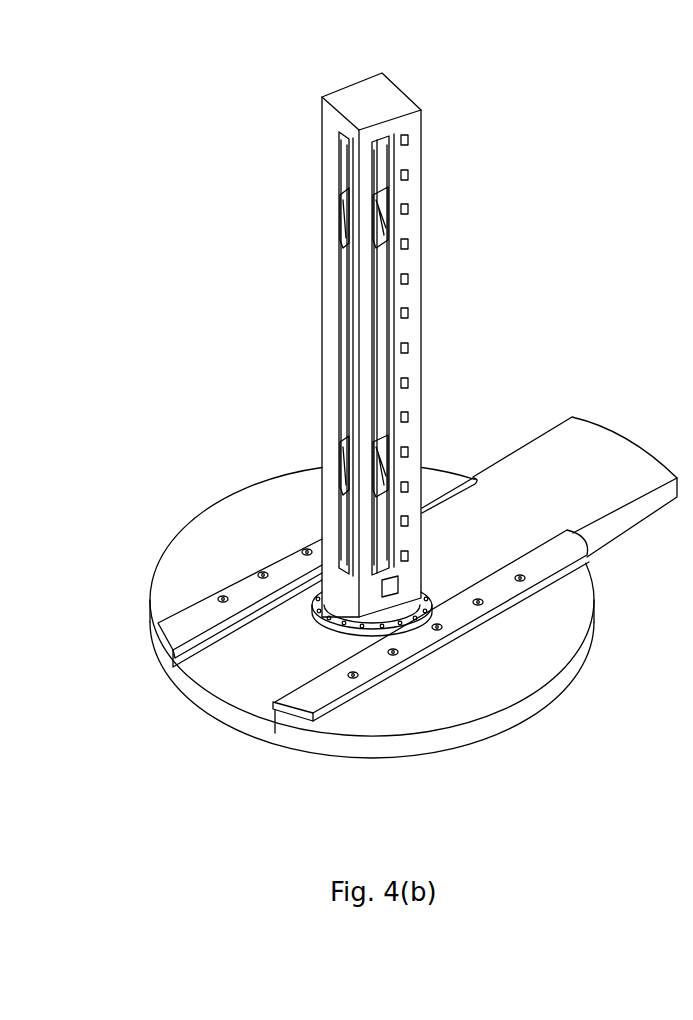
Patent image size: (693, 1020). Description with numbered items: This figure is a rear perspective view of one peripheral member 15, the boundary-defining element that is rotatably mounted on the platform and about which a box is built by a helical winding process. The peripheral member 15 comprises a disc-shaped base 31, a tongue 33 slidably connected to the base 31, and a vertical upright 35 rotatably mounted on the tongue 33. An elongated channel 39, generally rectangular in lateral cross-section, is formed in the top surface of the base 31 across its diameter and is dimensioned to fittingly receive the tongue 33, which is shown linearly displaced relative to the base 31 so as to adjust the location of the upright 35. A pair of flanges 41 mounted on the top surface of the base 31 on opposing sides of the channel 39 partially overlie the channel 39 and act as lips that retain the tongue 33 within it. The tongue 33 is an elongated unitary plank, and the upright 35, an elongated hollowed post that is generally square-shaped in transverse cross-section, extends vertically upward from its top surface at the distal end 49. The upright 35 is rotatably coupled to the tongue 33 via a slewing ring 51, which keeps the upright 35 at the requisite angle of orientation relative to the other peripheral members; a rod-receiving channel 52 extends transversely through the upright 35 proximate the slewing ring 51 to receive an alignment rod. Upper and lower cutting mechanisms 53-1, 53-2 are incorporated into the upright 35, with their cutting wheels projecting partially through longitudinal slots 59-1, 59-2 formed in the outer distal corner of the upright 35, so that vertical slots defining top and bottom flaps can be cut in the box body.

The peripheral member 15 is at (255, 797).
The disc-shaped base 31 is at (520, 715).
The tongue 33 is at (577, 447).
The vertical upright 35 is at (393, 97).
The elongated channel 39 is at (237, 695).
The flange 41 is at (445, 472).
The distal end 49 is at (298, 620).
The slewing ring 51 is at (320, 602).
The rod-receiving channel 52 is at (393, 585).
The upper cutting mechanism 53-1 is at (335, 210).
The lower cutting mechanism 53-2 is at (343, 455).
The longitudinal slot 59-1 is at (380, 163).
The longitudinal slot 59-2 is at (347, 313).